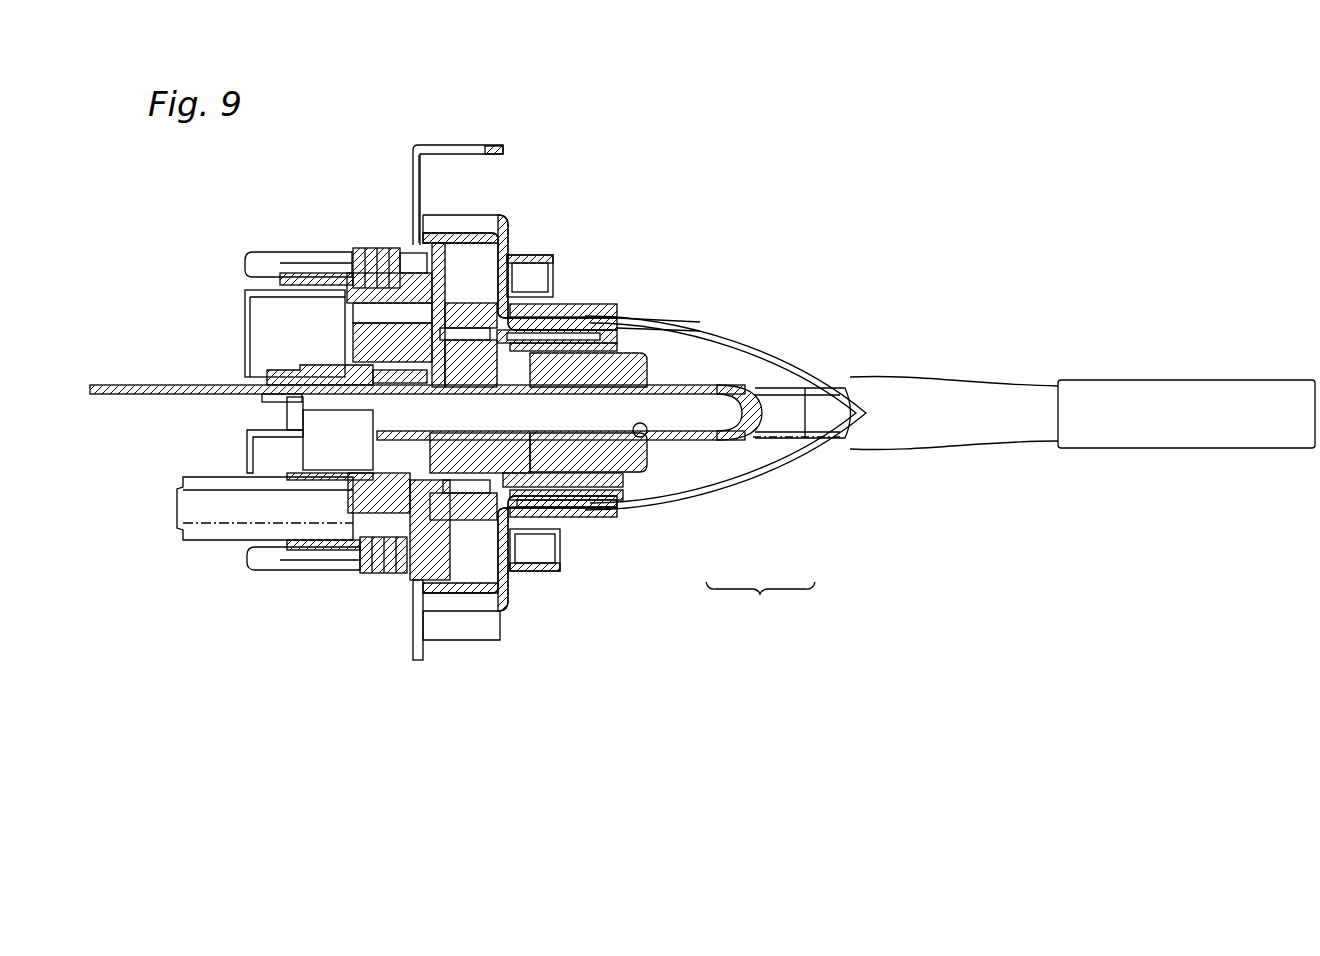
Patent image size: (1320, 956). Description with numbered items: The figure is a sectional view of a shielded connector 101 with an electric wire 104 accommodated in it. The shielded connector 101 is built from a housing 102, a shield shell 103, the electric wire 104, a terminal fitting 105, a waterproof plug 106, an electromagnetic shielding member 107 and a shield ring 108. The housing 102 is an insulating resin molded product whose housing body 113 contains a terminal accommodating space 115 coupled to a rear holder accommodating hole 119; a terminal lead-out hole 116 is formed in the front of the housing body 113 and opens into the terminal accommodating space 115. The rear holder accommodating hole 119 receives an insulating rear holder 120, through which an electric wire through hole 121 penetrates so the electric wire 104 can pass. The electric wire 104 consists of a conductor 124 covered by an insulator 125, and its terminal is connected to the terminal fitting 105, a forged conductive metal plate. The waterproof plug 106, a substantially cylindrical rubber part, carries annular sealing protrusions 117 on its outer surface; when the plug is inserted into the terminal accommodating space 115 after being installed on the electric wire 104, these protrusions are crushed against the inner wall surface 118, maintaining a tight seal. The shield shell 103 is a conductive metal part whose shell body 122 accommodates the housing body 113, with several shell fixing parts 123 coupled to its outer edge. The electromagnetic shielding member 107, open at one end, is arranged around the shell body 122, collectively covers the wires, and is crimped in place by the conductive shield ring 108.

The shielded connector 101 is at (815, 240).
The housing 102 is at (278, 243).
The shield shell 103 is at (500, 232).
The electric wire 104 is at (760, 602).
The terminal fitting 105 is at (200, 385).
The waterproof plug 106 is at (557, 303).
The electromagnetic shielding member 107 is at (848, 375).
The shield ring 108 is at (600, 325).
The housing body 113 is at (180, 485).
The terminal accommodating space 115 is at (335, 443).
The terminal lead-out hole 116 is at (262, 396).
The annular sealing protrusion 117 is at (413, 558).
The inner wall surface 118 is at (373, 570).
The rear holder accommodating hole 119 is at (587, 510).
The rear holder 120 is at (613, 507).
The electric wire through hole 121 is at (647, 498).
The shell body 122 is at (567, 307).
The shell fixing part 123 is at (452, 145).
The conductor 124 is at (700, 417).
The insulator 125 is at (738, 427).